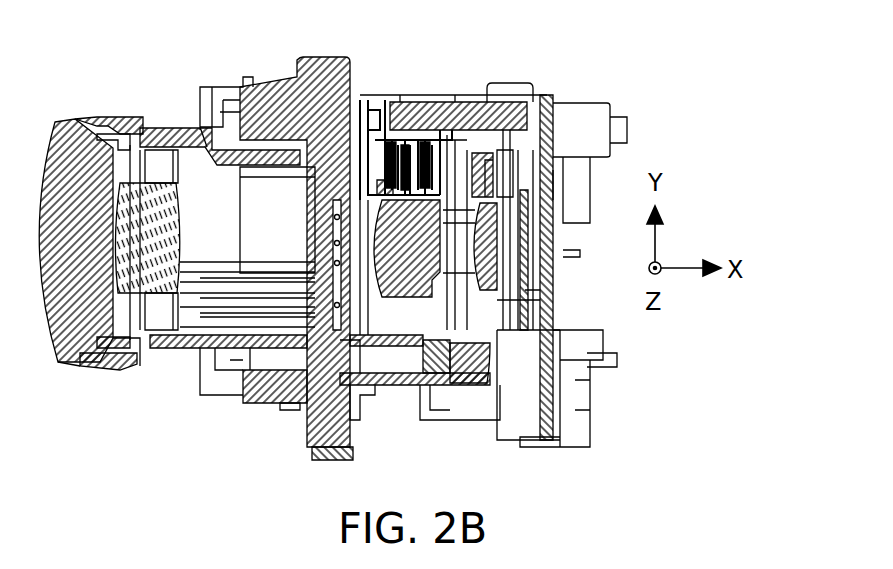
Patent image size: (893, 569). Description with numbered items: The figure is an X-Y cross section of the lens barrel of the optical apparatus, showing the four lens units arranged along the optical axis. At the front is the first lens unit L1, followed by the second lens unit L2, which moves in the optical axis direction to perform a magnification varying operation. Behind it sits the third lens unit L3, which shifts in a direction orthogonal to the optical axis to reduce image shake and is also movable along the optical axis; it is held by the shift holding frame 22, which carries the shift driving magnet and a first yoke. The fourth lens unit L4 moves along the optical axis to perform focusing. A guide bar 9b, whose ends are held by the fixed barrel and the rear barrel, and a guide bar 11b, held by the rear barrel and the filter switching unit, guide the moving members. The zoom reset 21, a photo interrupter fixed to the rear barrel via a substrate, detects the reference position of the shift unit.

The first lens unit L1 is at (88, 285).
The second lens unit L2 is at (148, 370).
The third lens unit L3 is at (400, 305).
The fourth lens unit L4 is at (483, 335).
The guide bar 9b is at (242, 290).
The guide bar 11b is at (453, 345).
The zoom reset 21 is at (387, 92).
The shift holding frame 22 is at (458, 100).